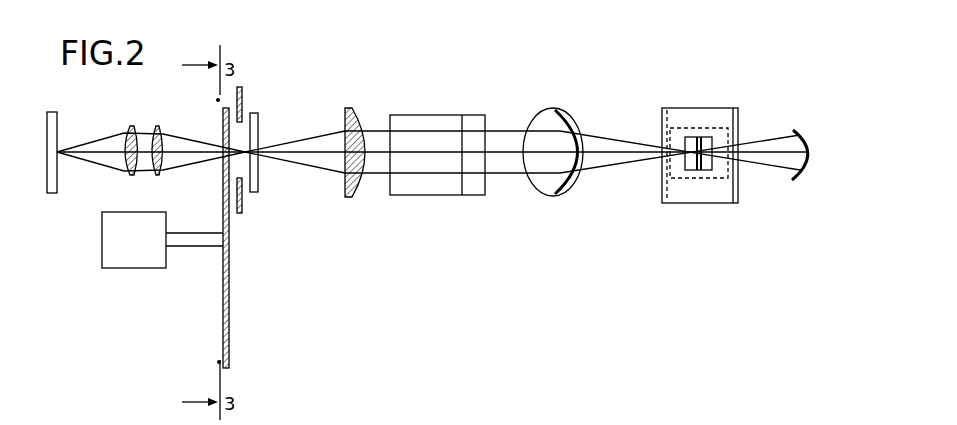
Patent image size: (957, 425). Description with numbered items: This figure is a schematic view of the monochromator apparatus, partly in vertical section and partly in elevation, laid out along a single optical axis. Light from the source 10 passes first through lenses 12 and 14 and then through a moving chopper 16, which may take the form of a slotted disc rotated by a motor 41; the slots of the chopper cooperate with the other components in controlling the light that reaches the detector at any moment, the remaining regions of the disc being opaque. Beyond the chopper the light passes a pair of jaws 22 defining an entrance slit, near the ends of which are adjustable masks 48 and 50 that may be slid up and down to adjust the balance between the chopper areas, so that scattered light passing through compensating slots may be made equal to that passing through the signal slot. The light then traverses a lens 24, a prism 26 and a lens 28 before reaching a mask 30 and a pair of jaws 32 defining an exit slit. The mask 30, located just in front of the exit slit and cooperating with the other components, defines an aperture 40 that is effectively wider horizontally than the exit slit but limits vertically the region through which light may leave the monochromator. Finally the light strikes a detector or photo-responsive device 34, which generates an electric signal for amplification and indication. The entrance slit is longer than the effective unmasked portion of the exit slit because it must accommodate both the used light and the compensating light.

The source 10 is at (57, 150).
The lens 12 is at (125, 126).
The lens 14 is at (160, 128).
The moving chopper 16 is at (231, 287).
The pair of jaws 22 is at (255, 172).
The lens 24 is at (350, 198).
The prism 26 is at (450, 123).
The lens 28 is at (552, 187).
The mask 30 is at (700, 203).
The pair of jaws 32 is at (720, 178).
The detector 34 is at (803, 130).
The aperture 40 is at (698, 137).
The motor 41 is at (160, 262).
The adjustable mask 48 is at (244, 104).
The adjustable mask 50 is at (241, 208).